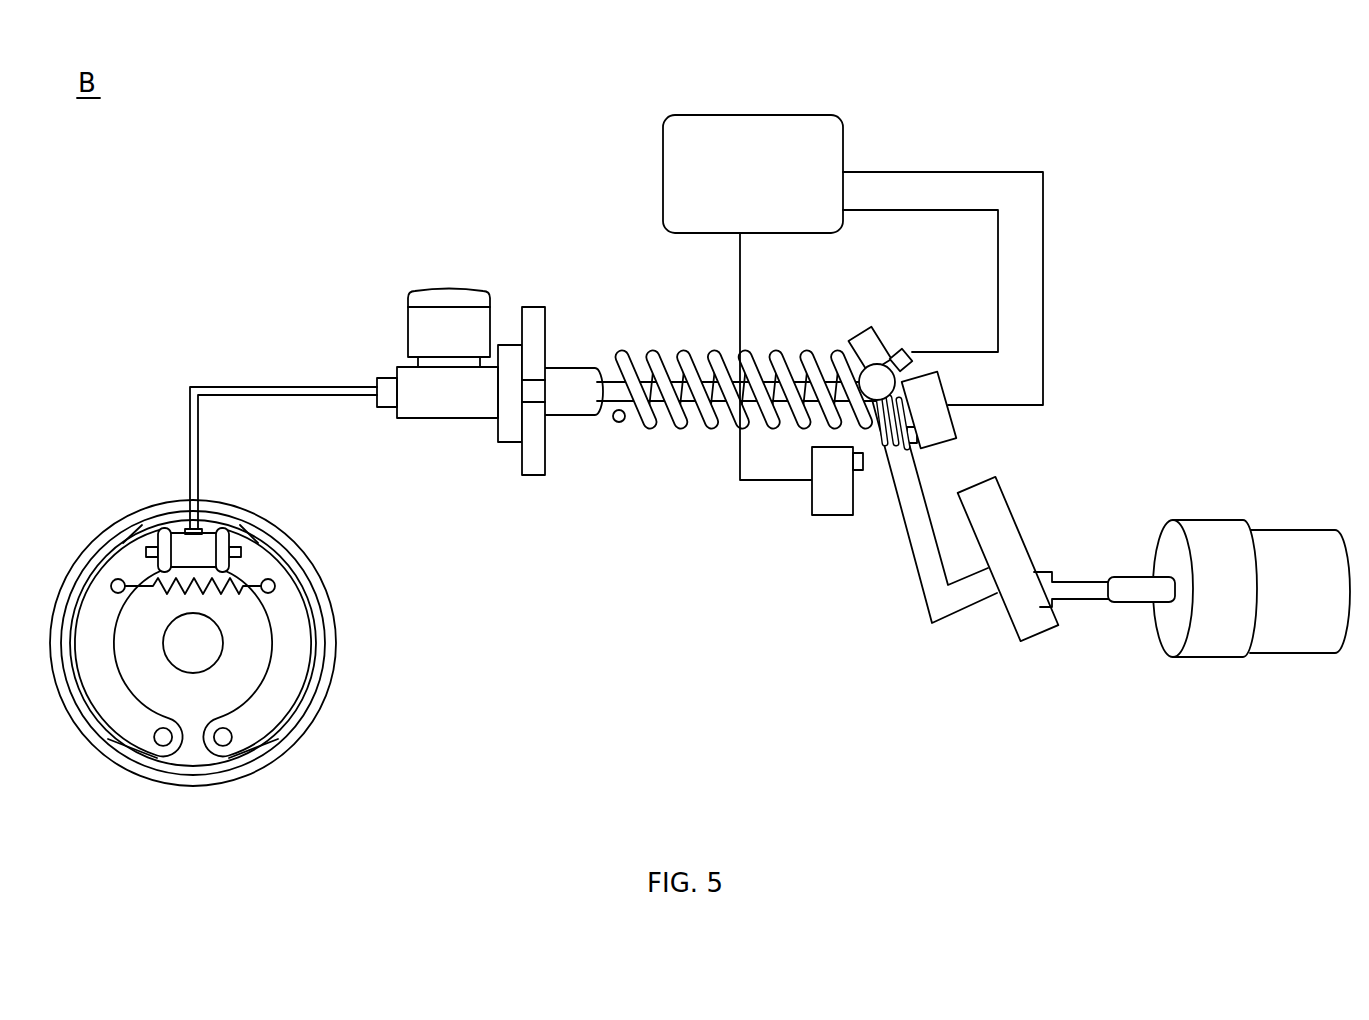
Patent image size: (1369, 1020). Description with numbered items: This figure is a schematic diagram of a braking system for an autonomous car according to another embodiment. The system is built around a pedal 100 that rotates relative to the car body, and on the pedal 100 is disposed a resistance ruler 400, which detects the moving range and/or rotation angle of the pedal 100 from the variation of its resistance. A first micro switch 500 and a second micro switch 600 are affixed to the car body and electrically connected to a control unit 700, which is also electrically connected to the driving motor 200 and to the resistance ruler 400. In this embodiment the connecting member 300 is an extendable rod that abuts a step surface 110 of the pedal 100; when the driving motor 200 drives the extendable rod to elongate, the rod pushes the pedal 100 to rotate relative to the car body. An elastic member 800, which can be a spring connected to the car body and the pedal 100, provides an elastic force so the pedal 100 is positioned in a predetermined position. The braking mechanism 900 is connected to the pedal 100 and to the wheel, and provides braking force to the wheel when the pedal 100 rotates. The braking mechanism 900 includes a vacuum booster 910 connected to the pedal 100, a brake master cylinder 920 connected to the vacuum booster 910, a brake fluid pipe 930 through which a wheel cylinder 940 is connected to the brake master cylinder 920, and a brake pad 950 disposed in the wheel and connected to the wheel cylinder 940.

The pedal 100 is at (960, 616).
The step surface 110 is at (1019, 512).
The driving motor 200 is at (1207, 660).
The connecting member 300 is at (1085, 598).
The resistance ruler 400 is at (890, 430).
The first micro switch 500 is at (947, 423).
The second micro switch 600 is at (831, 517).
The control unit 700 is at (752, 128).
The elastic member 800 is at (653, 360).
The braking mechanism 900 is at (366, 235).
The vacuum booster 910 is at (533, 320).
The brake master cylinder 920 is at (445, 318).
The brake fluid pipe 930 is at (230, 387).
The wheel cylinder 940 is at (182, 543).
The brake pad 950 is at (137, 727).